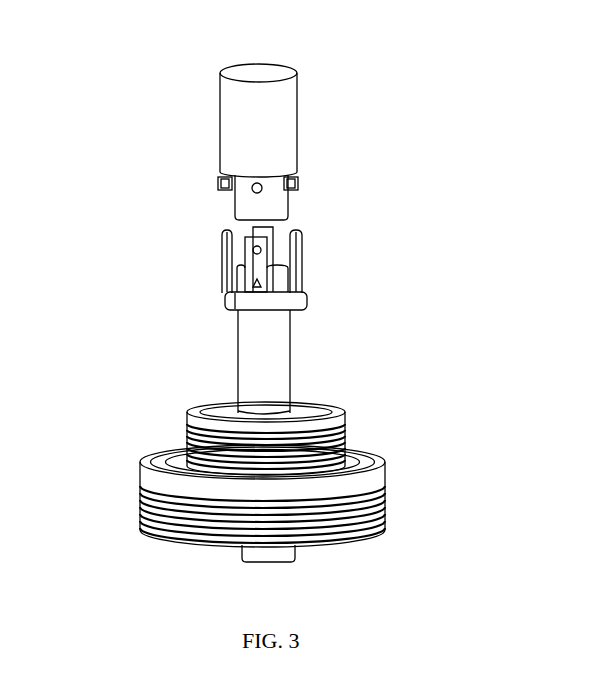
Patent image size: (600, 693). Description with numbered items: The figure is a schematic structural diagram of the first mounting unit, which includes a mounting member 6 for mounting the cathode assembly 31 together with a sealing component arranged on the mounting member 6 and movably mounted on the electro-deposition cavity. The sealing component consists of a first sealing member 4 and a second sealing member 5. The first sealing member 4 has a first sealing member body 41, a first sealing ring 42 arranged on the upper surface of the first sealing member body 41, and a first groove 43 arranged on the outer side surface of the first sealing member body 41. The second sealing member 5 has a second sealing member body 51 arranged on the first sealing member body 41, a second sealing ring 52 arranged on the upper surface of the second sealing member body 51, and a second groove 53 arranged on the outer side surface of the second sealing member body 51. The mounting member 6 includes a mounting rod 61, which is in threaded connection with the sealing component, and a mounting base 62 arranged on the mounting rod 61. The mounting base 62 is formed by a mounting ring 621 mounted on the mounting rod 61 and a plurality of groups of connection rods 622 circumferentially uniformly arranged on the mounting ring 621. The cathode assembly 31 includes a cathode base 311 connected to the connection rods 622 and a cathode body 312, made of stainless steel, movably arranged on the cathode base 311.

The first sealing member 4 is at (282, 474).
The first sealing member body 41 is at (383, 465).
The first sealing ring 42 is at (367, 457).
The first groove 43 is at (140, 493).
The second sealing member 5 is at (270, 407).
The second sealing member body 51 is at (343, 412).
The second sealing ring 52 is at (198, 408).
The second groove 53 is at (345, 450).
The mounting member 6 is at (291, 307).
The mounting rod 61 is at (238, 358).
The mounting base 62 is at (291, 255).
The mounting ring 621 is at (230, 290).
The connection rods 622 is at (302, 258).
The cathode assembly 31 is at (259, 109).
The cathode base 311 is at (287, 195).
The cathode body 312 is at (218, 120).